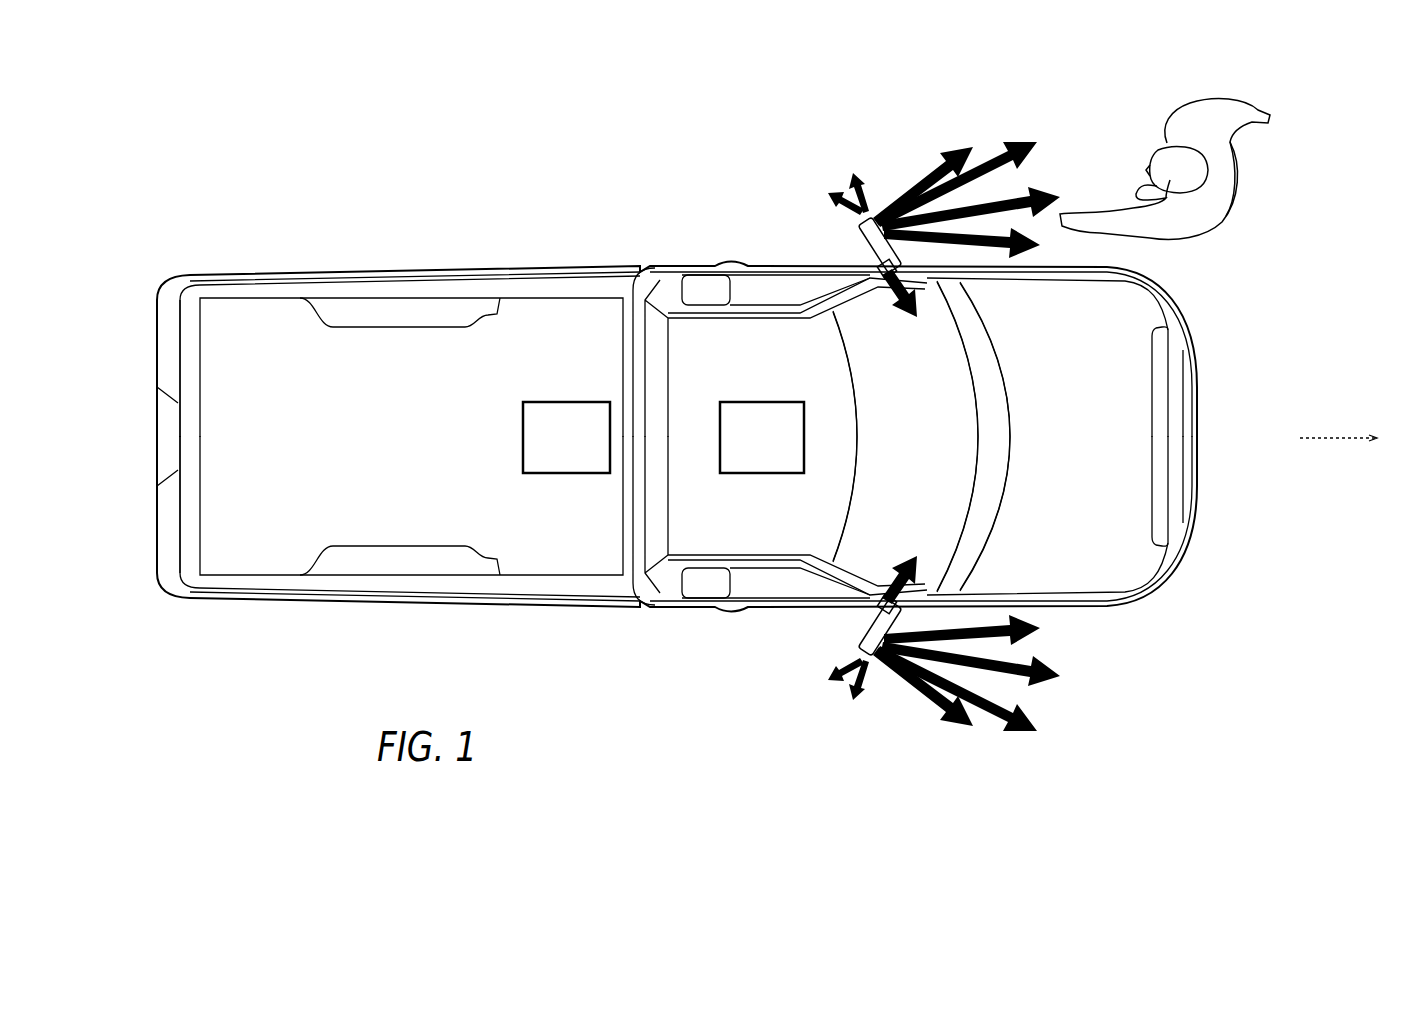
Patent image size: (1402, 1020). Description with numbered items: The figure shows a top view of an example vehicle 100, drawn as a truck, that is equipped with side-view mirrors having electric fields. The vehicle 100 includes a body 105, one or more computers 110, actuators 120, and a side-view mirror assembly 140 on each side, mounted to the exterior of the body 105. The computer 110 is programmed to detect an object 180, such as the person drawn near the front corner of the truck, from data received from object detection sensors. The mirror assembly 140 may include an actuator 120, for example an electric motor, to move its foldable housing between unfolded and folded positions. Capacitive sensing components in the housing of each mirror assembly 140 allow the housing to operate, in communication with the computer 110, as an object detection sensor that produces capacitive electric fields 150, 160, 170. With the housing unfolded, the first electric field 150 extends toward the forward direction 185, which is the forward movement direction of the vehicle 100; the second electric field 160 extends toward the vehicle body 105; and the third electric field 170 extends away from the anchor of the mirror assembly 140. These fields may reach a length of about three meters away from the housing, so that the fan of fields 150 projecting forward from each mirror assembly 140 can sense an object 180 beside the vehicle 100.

The vehicle 100 is at (377, 138).
The body 105 is at (1168, 320).
The computer 110 is at (762, 437).
The actuator 120 is at (566, 437).
The side-view mirror assembly 140 is at (862, 150).
The first electric field 150 is at (1018, 127).
The second electric field 160 is at (927, 310).
The third electric field 170 is at (833, 225).
The object 180 is at (1220, 170).
The forward direction 185 is at (1317, 438).